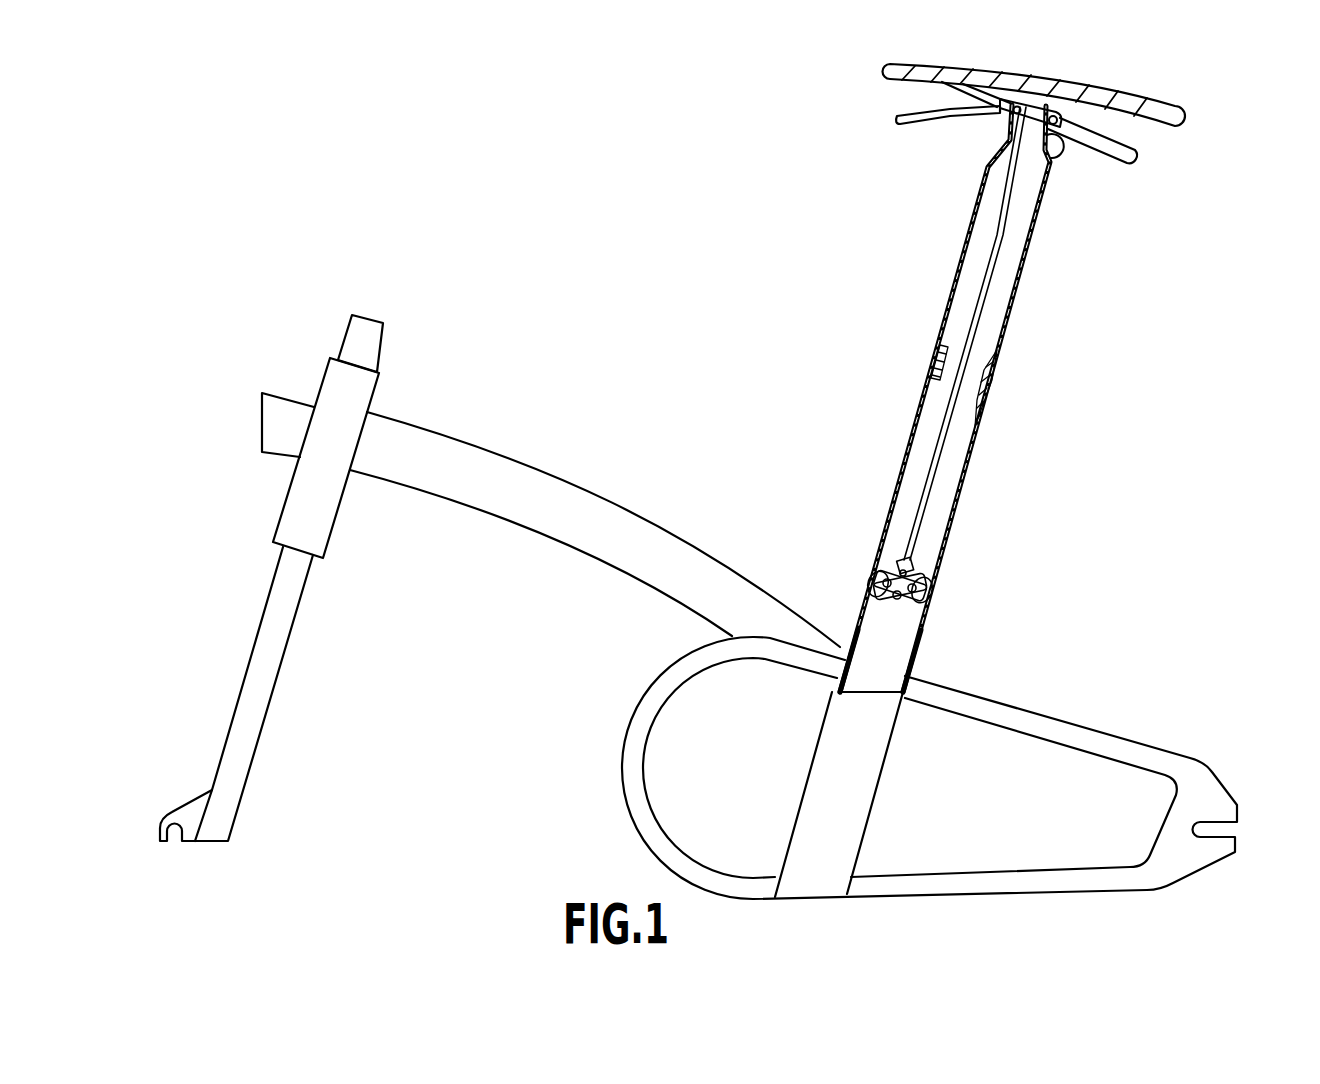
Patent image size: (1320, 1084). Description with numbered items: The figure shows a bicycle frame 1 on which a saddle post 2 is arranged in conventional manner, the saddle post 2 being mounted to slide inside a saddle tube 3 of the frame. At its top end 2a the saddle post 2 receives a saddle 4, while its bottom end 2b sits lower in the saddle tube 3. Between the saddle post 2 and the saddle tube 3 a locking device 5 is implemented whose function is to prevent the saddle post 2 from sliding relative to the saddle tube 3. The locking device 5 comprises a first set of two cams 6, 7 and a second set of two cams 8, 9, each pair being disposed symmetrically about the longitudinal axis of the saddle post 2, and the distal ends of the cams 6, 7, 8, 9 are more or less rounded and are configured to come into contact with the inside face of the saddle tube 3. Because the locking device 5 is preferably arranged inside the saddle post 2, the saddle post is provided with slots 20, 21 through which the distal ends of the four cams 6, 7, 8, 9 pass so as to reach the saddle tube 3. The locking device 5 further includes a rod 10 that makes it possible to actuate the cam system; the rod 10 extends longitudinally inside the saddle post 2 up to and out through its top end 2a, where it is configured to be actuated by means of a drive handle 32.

The bicycle frame 1 is at (530, 232).
The saddle post 2 is at (952, 432).
The top end of saddle post 2a is at (1015, 117).
The bottom end of saddle post 2b is at (848, 696).
The saddle tube 3 is at (908, 448).
The saddle 4 is at (1130, 96).
The locking device 5 is at (882, 560).
The cam 6 is at (870, 587).
The cam 7 is at (935, 598).
The cam 8 is at (878, 562).
The cam 9 is at (932, 578).
The rod 10 is at (937, 451).
The slot 20 is at (880, 604).
The slot 21 is at (925, 613).
The drive handle 32 is at (902, 128).